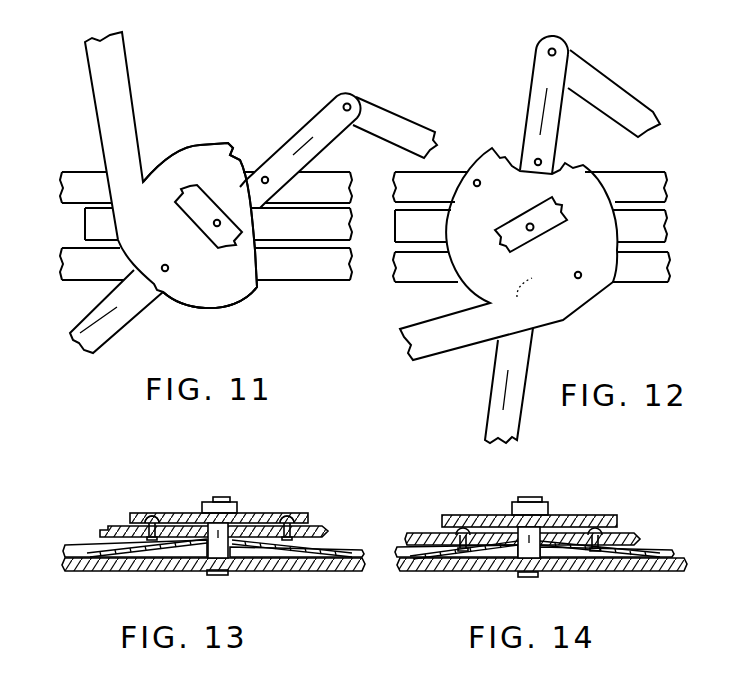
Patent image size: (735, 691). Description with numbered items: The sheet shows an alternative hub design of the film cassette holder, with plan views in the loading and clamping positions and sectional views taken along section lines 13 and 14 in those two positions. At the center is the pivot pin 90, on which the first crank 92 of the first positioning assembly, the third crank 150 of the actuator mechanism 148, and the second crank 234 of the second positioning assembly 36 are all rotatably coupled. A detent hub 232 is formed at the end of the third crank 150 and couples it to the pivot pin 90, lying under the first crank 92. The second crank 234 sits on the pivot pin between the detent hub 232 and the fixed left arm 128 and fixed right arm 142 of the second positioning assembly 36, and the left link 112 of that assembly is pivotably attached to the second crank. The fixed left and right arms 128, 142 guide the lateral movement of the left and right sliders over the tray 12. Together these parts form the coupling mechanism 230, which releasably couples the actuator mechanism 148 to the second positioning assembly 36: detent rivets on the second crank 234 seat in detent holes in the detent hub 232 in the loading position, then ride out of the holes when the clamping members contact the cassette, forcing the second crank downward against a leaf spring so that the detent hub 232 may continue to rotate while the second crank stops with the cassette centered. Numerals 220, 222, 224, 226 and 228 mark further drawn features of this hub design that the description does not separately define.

In FIG. 13, the tray 12 is at (132, 572).
In FIG. 11, the section line 13- 13 is at (313, 137).
In FIG. 12, the section line 14- 14 is at (547, 88).
In FIG. 11, the second positioning assembly 36 is at (347, 72).
In FIG. 11, the pivot pin 90 is at (213, 224).
In FIG. 13, the pivot pin 90 is at (215, 496).
In FIG. 11, the first crank 92 is at (183, 202).
In FIG. 13, the first crank 92 is at (240, 508).
In FIG. 11, the left link 112 is at (424, 83).
In FIG. 11, the fixed left arm 128 is at (78, 172).
In FIG. 13, the fixed left arm 128 is at (80, 543).
In FIG. 11, the fixed right arm 142 is at (298, 281).
In FIG. 11, the actuator mechanism 148 is at (171, 170).
In FIG. 11, the third crank 150 is at (133, 90).
In FIG. 11, the plate bottom edge 220 is at (226, 307).
In FIG. 11, the plate 222 is at (214, 120).
In FIG. 12, the plate 222 is at (586, 301).
In FIG. 13, the plate 222 is at (345, 514).
In FIG. 14, the plate 222 is at (485, 493).
In FIG. 11, the arm 224 is at (138, 313).
In FIG. 12, the arm 224 is at (564, 103).
In FIG. 13, the arm 224 is at (106, 525).
In FIG. 14, the arm 224 is at (412, 533).
In FIG. 11, the middle rail 226 is at (85, 228).
In FIG. 13, the middle rail 226 is at (350, 546).
In FIG. 14, the middle rail 226 is at (655, 550).
In FIG. 12, the rivet hole 228 is at (549, 283).
In FIG. 13, the rivet hole 228 is at (156, 520).
In FIG. 11, the coupling mechanism 230 is at (270, 179).
In FIG. 12, the coupling mechanism 230 is at (542, 161).
In FIG. 13, the coupling mechanism 230 is at (284, 518).
In FIG. 14, the coupling mechanism 230 is at (600, 532).
In FIG. 11, the detent hub 232 is at (169, 269).
In FIG. 13, the detent hub 232 is at (153, 512).
In FIG. 12, the second crank 234 is at (480, 186).
In FIG. 13, the second crank 234 is at (292, 521).